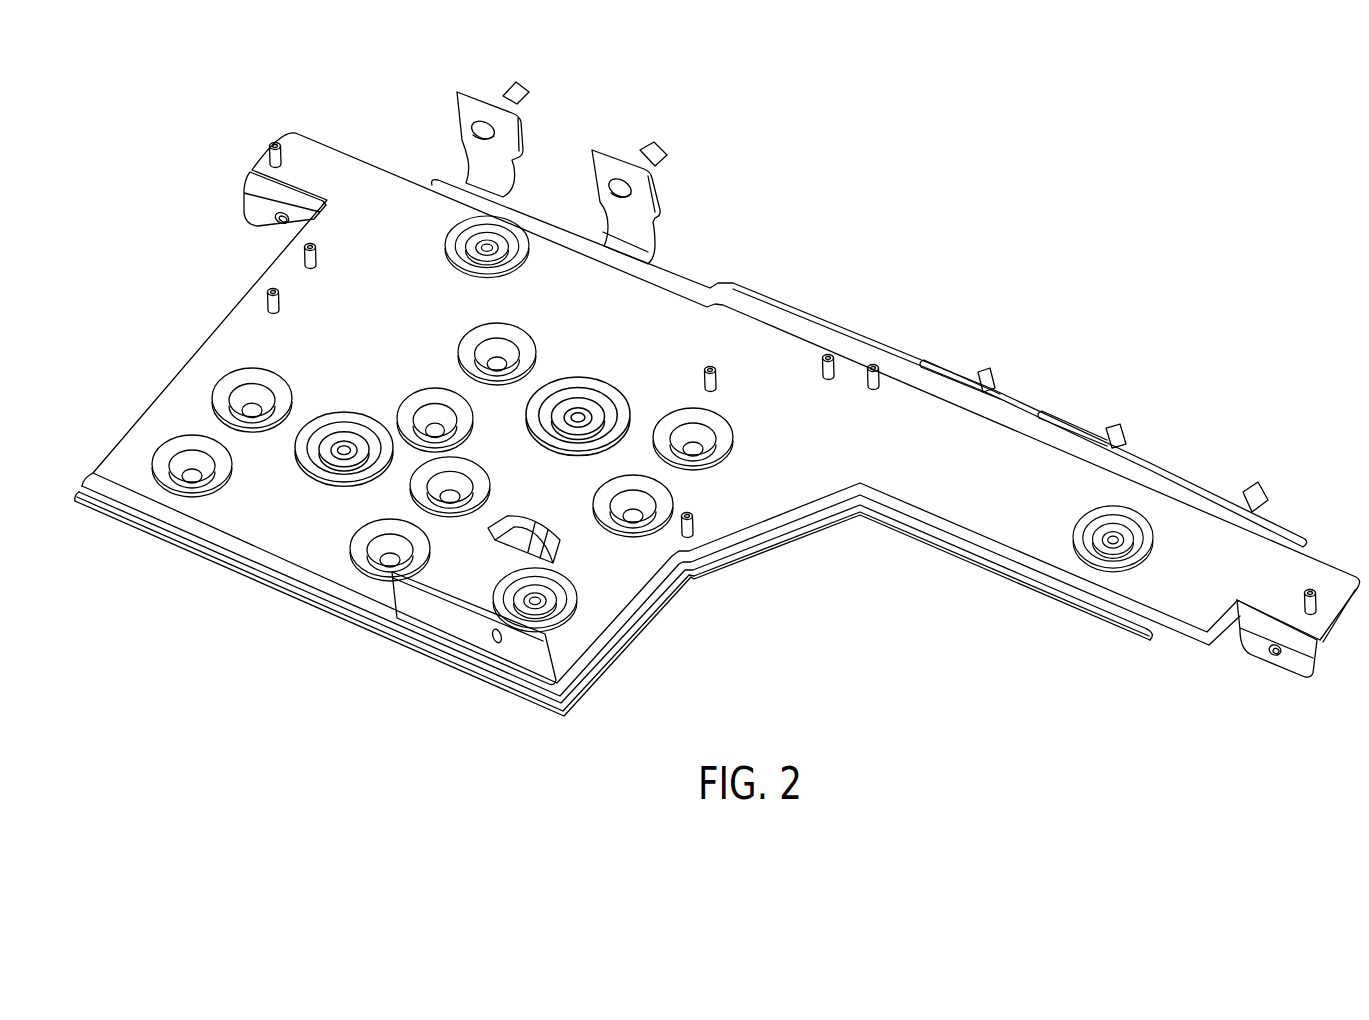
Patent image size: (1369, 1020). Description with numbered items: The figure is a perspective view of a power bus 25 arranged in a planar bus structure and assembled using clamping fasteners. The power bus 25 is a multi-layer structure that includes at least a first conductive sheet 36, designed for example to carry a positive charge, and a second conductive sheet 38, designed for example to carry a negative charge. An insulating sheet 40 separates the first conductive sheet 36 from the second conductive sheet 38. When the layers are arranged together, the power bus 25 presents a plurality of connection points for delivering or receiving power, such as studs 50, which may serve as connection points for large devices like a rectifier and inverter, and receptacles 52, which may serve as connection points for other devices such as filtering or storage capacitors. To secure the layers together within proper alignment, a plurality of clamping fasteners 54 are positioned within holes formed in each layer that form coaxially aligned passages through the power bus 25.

The power bus 25 is at (900, 302).
The first conductive sheet 36 is at (89, 469).
The second conductive sheet 38 is at (157, 538).
The insulating sheet 40 is at (104, 501).
The studs 50 is at (660, 142).
The receptacles 52 is at (433, 340).
The clamping fasteners 54 is at (523, 252).